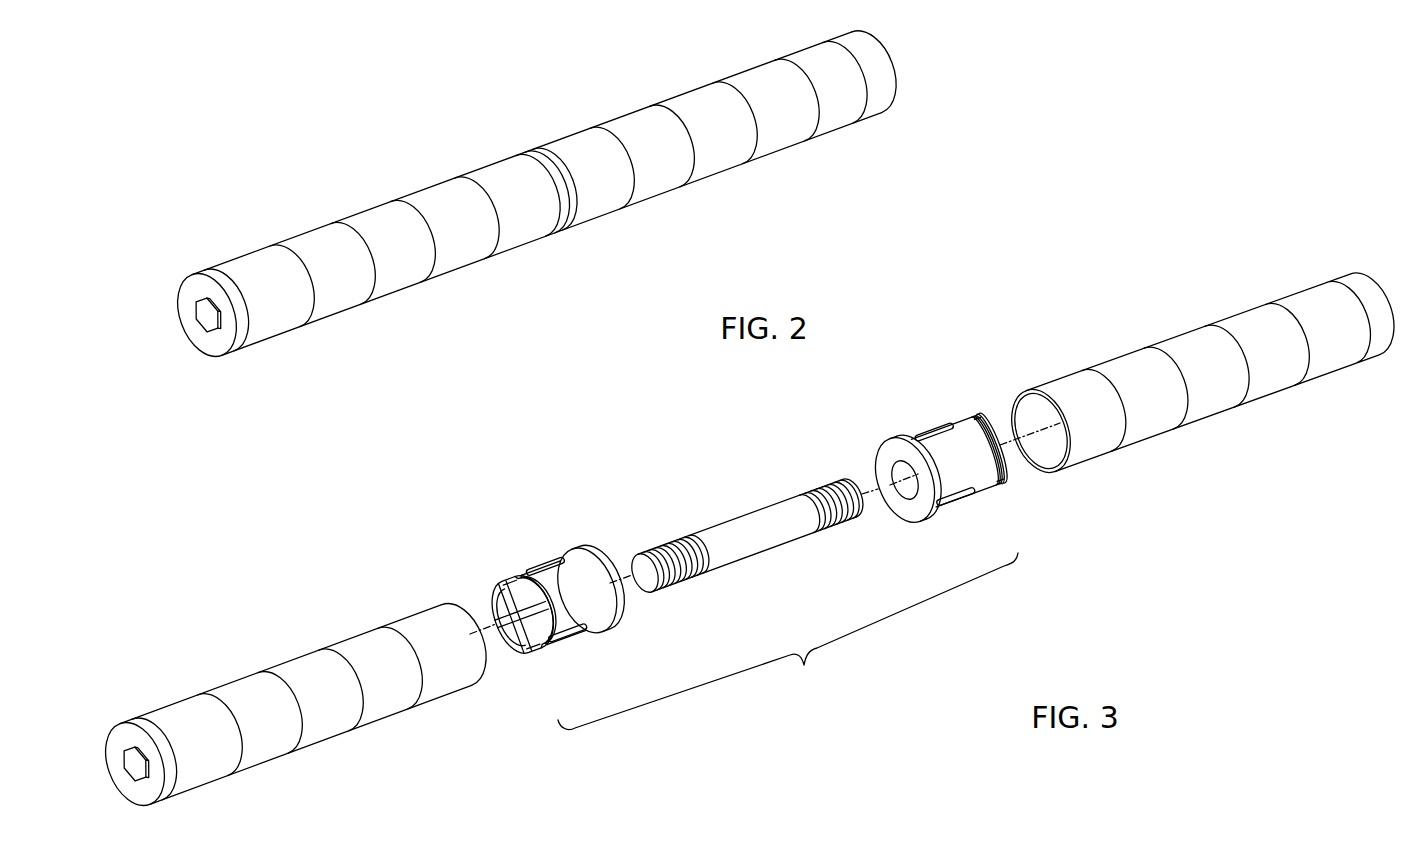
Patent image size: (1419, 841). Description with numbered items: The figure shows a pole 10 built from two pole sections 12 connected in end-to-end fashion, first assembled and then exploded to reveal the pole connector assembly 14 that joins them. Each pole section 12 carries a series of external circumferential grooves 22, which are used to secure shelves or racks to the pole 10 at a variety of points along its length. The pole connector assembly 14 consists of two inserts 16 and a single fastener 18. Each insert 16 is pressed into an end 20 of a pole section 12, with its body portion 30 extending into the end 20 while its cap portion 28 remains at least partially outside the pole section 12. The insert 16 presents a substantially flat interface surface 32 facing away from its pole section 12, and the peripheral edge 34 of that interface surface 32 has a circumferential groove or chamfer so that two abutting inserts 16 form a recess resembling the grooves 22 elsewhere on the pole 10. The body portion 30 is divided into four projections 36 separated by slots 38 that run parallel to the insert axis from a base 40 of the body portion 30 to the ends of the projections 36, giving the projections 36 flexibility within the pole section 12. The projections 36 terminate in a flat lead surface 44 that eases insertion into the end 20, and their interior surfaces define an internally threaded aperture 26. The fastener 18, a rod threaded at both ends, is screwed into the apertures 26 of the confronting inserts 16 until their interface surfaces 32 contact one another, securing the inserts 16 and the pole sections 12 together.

In FIG. 2, the pole 10 is at (537, 194).
In FIG. 3, the pole 10 is at (750, 539).
In FIG. 2, the pole section 12 is at (720, 159).
In FIG. 3, the pole section 12 is at (322, 728).
In FIG. 2, the pole connector assembly 14 is at (586, 211).
In FIG. 3, the pole connector assembly 14 is at (747, 548).
In FIG. 3, the insert 16 is at (747, 532).
In FIG. 3, the fastener 18 is at (728, 519).
In FIG. 2, the end of pole section 20 is at (564, 134).
In FIG. 3, the end of pole section 20 is at (466, 679).
In FIG. 2, the grooves 22 is at (337, 217).
In FIG. 3, the grooves 22 is at (1215, 327).
In FIG. 3, the aperture 26 is at (888, 477).
In FIG. 2, the cap portion 28 is at (560, 224).
In FIG. 3, the cap portion 28 is at (906, 436).
In FIG. 3, the body portion 30 is at (550, 597).
In FIG. 3, the interface surface 32 is at (612, 609).
In FIG. 2, the peripheral edge 34 is at (560, 185).
In FIG. 3, the peripheral edge 34 is at (606, 635).
In FIG. 3, the projections 36 is at (538, 651).
In FIG. 3, the slots 38 is at (603, 569).
In FIG. 3, the base 40 is at (586, 571).
In FIG. 3, the lead surface 44 is at (512, 601).